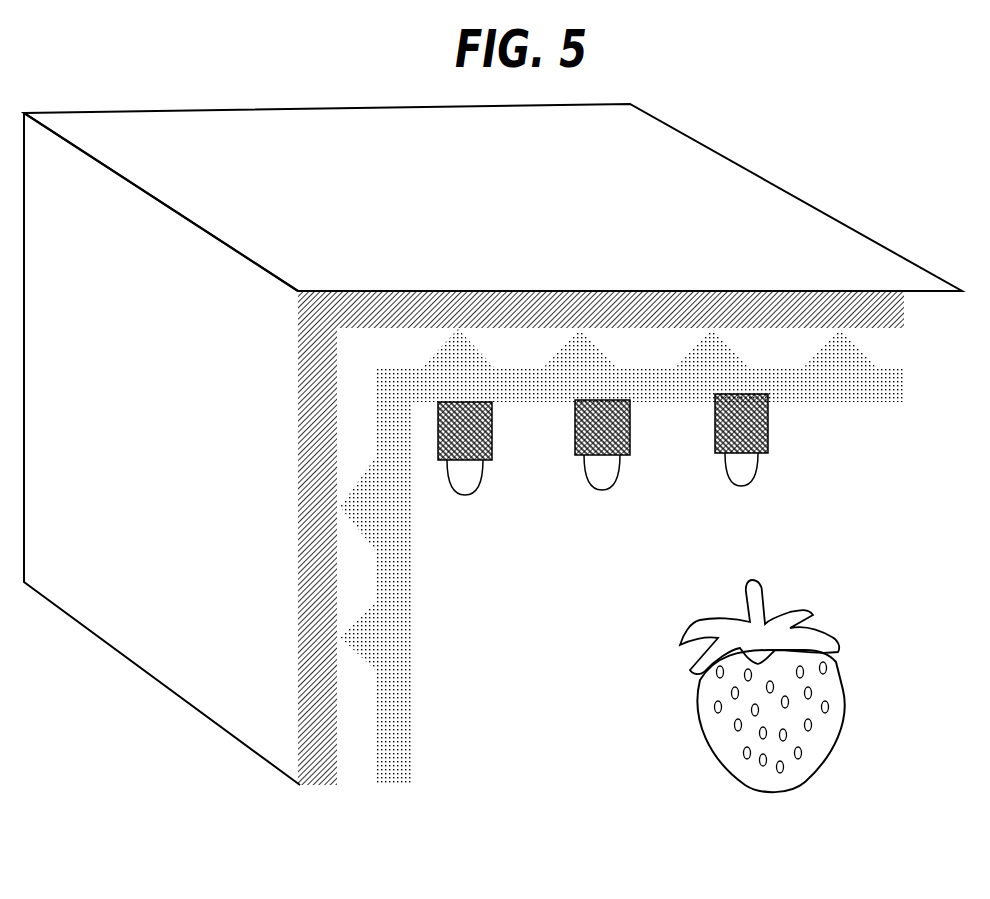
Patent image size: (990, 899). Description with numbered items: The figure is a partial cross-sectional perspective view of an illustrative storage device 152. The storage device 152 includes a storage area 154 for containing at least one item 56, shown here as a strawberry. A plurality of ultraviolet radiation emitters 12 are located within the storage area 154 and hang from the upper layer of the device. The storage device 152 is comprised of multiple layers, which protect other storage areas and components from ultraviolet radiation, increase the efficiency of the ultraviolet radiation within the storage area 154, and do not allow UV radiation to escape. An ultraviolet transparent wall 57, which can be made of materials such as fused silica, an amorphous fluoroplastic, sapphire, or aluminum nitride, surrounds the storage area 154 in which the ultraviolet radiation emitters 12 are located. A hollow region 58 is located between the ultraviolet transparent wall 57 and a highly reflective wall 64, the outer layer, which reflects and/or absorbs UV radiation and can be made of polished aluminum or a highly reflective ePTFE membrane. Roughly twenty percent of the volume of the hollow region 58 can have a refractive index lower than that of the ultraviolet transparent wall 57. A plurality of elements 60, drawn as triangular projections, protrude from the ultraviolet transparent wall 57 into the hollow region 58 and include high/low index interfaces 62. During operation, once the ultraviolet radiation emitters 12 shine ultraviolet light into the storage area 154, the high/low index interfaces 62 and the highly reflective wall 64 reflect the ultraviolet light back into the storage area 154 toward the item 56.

The storage device 152 is at (588, 200).
The storage area 154 is at (664, 571).
The ultraviolet radiation emitters 12 is at (712, 425).
The highly reflective wall 64 is at (314, 667).
The high/low index interfaces 62 is at (368, 537).
The elements 60 is at (370, 640).
The ultraviolet transparent wall 57 is at (394, 702).
The hollow region 58 is at (360, 750).
The item 56 is at (688, 705).